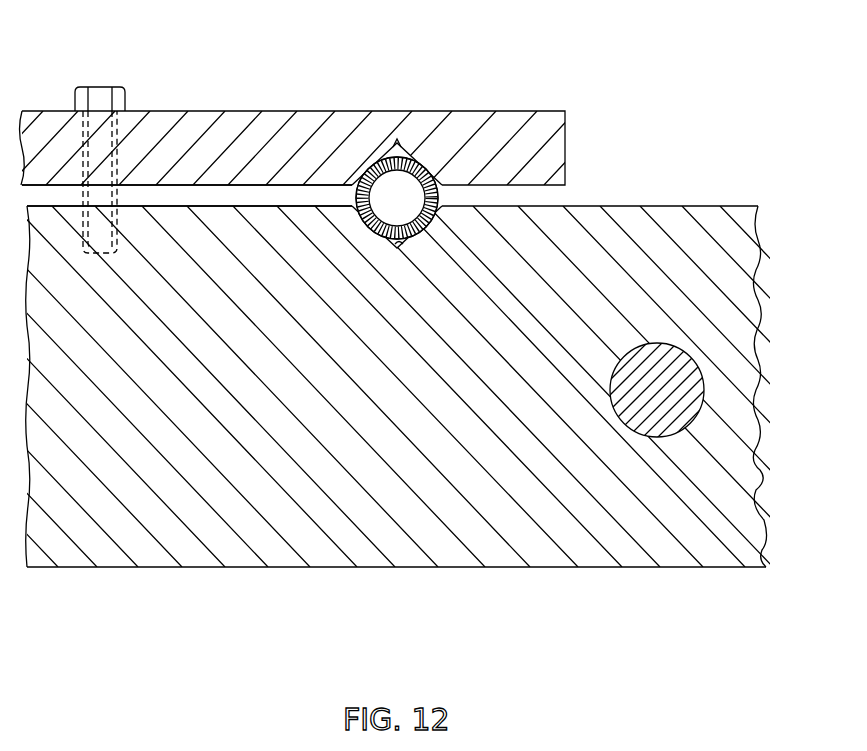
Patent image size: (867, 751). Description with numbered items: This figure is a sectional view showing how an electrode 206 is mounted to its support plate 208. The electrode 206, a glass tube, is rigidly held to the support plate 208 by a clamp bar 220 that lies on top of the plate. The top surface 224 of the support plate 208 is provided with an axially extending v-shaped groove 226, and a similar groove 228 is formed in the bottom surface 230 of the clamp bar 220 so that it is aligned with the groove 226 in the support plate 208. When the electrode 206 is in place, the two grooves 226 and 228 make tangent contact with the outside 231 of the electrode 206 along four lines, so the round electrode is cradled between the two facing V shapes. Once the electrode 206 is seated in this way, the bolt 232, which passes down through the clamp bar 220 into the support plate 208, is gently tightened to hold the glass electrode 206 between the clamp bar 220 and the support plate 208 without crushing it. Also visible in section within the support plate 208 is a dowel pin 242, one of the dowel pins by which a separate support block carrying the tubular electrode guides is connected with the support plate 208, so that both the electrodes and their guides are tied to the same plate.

The clamp bar 220 is at (293, 108).
The support plate 208 is at (284, 570).
The bolt 232 is at (181, 60).
The groove 228 is at (398, 142).
The v-shaped groove 226 is at (401, 250).
The bottom surface 230 is at (298, 150).
The top surface 224 is at (243, 202).
The electrode 206 is at (437, 214).
The outside 231 is at (440, 190).
The dowel pin 242 is at (612, 402).